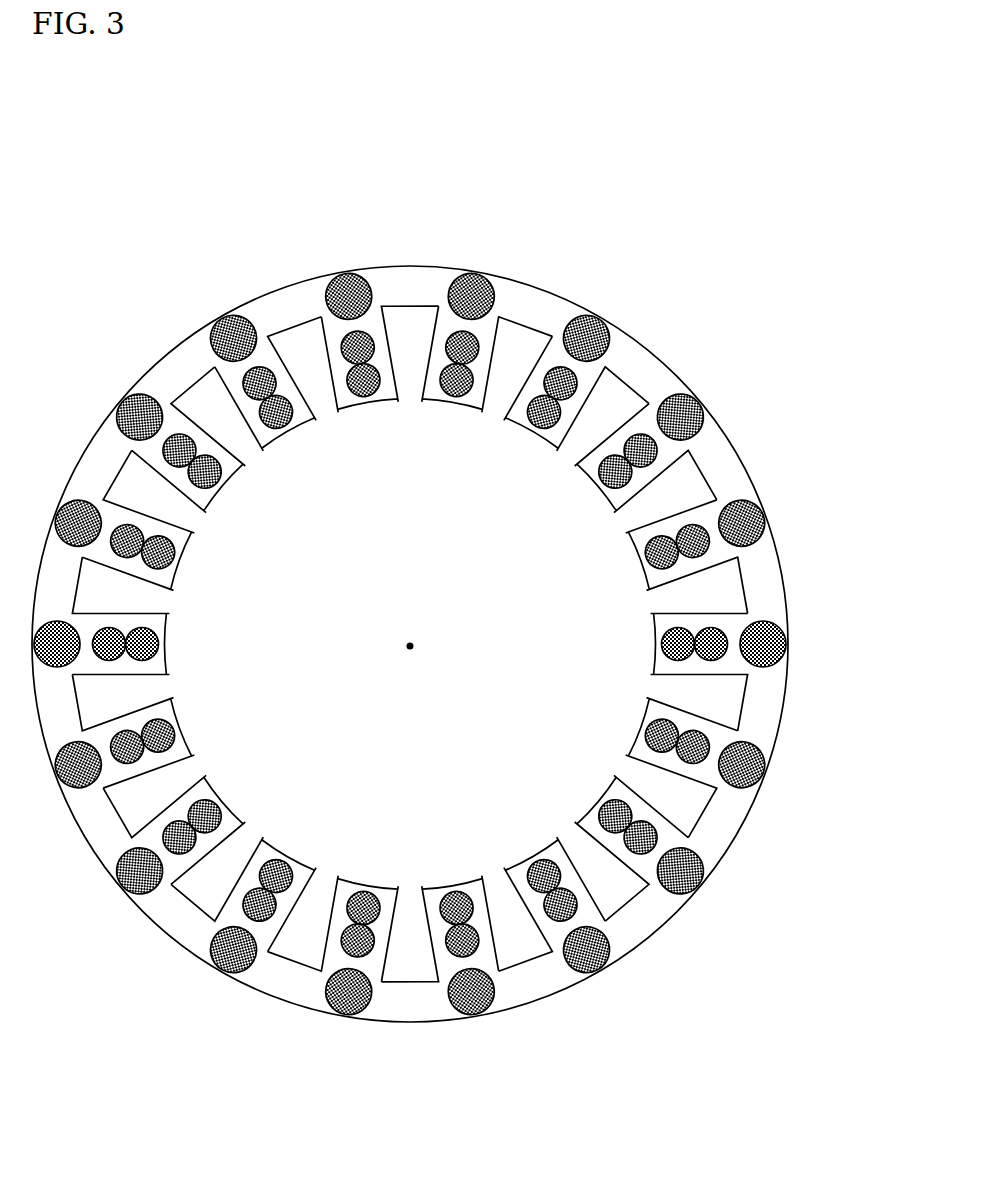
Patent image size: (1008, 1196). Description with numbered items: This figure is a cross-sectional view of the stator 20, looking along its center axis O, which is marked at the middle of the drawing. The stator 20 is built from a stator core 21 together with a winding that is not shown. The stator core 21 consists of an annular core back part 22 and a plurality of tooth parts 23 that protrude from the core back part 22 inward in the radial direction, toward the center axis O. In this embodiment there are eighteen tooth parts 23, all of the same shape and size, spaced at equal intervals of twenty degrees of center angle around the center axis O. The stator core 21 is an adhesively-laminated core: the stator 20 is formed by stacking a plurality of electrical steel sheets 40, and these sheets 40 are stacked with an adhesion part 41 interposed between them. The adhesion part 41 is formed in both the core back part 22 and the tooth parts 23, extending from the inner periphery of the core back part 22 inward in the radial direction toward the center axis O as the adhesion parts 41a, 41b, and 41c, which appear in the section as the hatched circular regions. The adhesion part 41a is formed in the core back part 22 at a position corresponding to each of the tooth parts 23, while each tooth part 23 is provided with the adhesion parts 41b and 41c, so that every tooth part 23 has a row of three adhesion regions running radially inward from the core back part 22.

The stator 20 is at (712, 134).
The stator core 21 is at (633, 192).
The core back part 22 is at (634, 360).
The tooth part 23 is at (553, 362).
The electrical steel sheet 40 is at (182, 358).
The adhesion part 41 is at (342, 142).
The adhesion part 41a is at (245, 316).
The adhesion part 41b is at (273, 368).
The adhesion part 41c is at (288, 400).
The center axis O is at (413, 642).